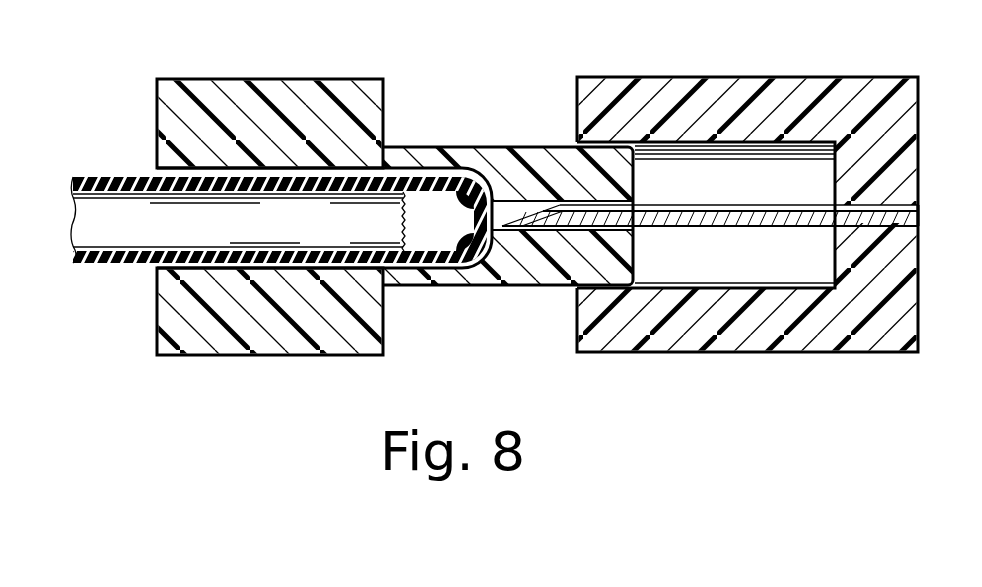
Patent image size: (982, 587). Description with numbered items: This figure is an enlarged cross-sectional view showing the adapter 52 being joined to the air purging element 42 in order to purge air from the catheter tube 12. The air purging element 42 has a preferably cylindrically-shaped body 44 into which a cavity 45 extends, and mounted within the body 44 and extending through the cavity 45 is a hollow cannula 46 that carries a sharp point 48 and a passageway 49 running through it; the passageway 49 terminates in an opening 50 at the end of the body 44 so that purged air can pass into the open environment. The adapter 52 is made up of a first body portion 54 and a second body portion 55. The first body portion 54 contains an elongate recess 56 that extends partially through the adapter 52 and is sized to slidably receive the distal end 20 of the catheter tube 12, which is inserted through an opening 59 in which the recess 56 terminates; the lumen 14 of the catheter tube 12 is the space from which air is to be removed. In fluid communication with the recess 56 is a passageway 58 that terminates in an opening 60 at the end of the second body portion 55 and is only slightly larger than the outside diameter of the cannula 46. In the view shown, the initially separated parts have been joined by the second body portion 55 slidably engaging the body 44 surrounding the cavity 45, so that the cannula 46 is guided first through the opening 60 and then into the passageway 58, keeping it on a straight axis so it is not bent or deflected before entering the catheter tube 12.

The optical fiber cable 12 is at (76, 264).
The lumen 14 is at (378, 216).
The distal end of catheter tube 20 is at (470, 176).
The air purging element 42 is at (660, 78).
The body 44 is at (870, 95).
The cavity 45 is at (720, 273).
The hollow cannula 46 is at (737, 227).
The sharp point 48 is at (505, 232).
The passageway 49 is at (790, 194).
The opening 50 is at (918, 214).
The adapter 52 is at (307, 356).
The first body portion 54 is at (245, 327).
The second body portion 55 is at (465, 290).
The elongate recess 56 is at (480, 200).
The passageway 58 is at (532, 205).
The opening 59 is at (157, 268).
The opening 60 is at (635, 228).